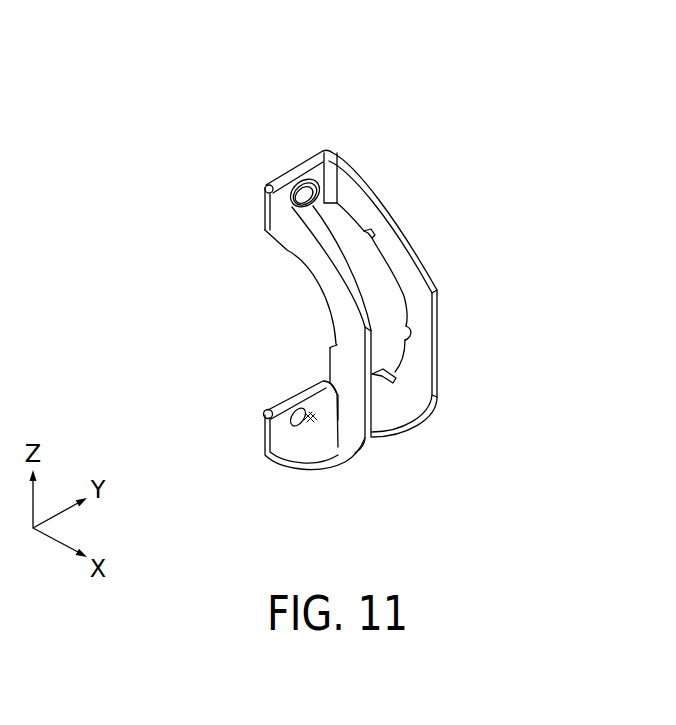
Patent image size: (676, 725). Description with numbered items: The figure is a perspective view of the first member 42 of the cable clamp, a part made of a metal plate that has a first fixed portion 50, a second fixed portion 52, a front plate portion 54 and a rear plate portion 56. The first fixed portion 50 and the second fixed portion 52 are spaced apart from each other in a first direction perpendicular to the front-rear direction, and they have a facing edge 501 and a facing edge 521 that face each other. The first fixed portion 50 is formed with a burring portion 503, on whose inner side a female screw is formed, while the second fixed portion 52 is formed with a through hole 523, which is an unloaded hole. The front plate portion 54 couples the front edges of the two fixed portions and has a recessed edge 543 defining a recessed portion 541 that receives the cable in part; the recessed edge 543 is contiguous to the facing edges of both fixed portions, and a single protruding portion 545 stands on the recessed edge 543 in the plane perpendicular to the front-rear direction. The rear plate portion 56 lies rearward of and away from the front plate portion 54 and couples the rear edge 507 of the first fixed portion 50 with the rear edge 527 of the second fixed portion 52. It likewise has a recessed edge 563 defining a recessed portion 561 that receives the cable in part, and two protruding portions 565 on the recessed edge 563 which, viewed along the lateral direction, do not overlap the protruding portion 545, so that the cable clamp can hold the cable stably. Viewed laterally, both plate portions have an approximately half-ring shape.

The first member 42 is at (404, 50).
The first fixed portion 50 is at (378, 132).
The burring portion 503 is at (306, 178).
The rear edge 507 is at (338, 176).
The facing edge 501 is at (321, 205).
The second fixed portion 52 is at (313, 302).
The facing edge 521 is at (271, 464).
The through hole 523 is at (315, 421).
The rear edge 527 is at (340, 378).
The front plate portion 54 is at (353, 378).
The recessed portion 541 is at (247, 338).
The recessed edge 543 is at (320, 292).
The protruding portion 545 is at (330, 368).
The rear plate portion 56 is at (439, 309).
The recessed portion 561 is at (391, 318).
The recessed edge 563 is at (404, 328).
The protruding portions 565 is at (373, 249).